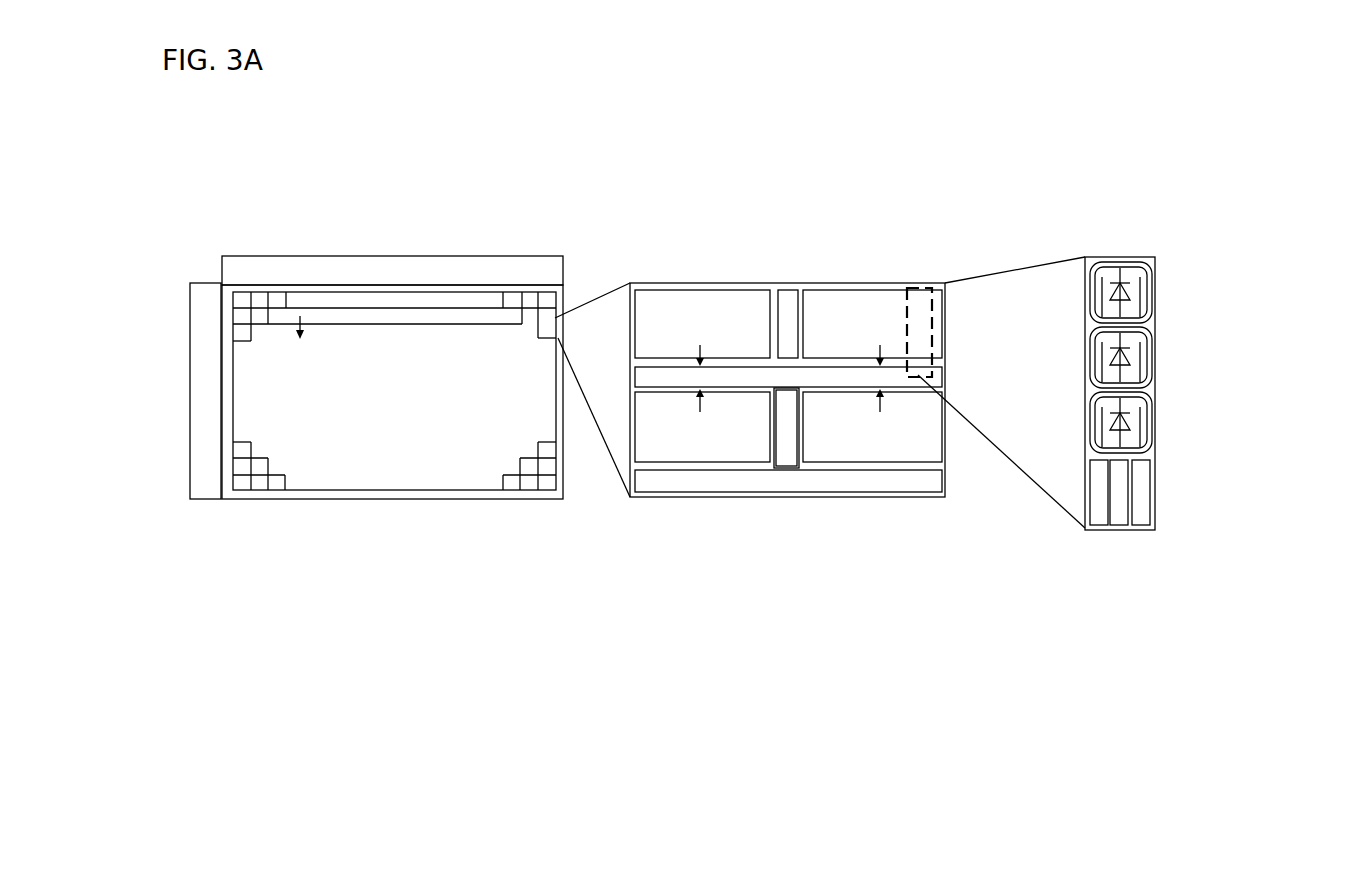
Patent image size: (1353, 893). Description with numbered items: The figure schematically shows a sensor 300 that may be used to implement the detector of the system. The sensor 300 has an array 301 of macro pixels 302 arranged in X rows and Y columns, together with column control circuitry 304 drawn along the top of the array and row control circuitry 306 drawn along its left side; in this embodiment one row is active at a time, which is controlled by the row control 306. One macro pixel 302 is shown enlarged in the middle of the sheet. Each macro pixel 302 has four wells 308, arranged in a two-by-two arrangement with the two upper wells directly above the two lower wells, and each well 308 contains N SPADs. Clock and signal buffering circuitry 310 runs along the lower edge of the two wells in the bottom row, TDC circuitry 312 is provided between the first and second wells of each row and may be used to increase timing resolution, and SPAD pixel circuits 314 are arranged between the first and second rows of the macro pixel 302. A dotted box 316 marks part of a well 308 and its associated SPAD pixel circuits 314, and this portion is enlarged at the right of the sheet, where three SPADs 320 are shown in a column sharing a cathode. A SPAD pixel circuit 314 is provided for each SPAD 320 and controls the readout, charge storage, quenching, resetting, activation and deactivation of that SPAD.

The sensor 300 is at (358, 240).
The array 301 is at (382, 475).
The macro pixel 302 is at (753, 283).
The control circuitry 304 is at (392, 271).
The row control circuitry 306 is at (202, 488).
The well 308 is at (852, 433).
The clock and signal buffering circuitry 310 is at (788, 481).
The TDC circuitry 312 is at (790, 290).
The SPAD pixel circuits 314 is at (1188, 487).
The dotted box 316 is at (918, 288).
The SPAD 320 is at (1142, 333).